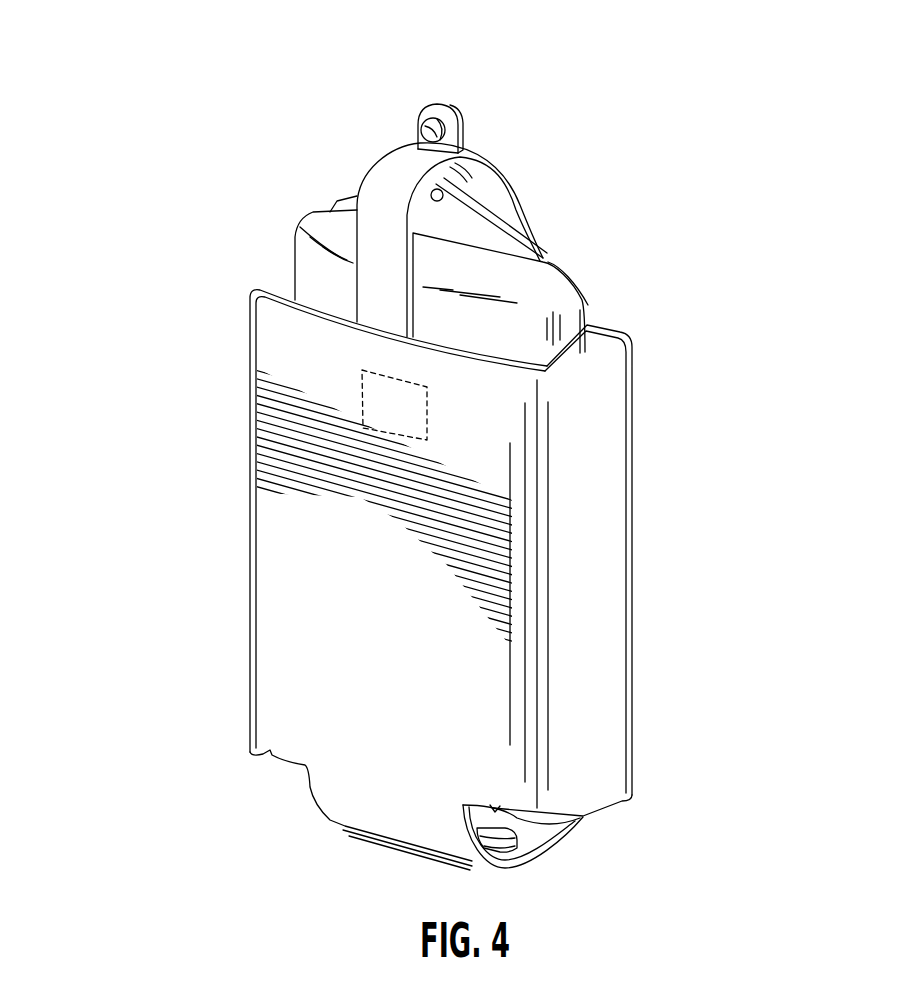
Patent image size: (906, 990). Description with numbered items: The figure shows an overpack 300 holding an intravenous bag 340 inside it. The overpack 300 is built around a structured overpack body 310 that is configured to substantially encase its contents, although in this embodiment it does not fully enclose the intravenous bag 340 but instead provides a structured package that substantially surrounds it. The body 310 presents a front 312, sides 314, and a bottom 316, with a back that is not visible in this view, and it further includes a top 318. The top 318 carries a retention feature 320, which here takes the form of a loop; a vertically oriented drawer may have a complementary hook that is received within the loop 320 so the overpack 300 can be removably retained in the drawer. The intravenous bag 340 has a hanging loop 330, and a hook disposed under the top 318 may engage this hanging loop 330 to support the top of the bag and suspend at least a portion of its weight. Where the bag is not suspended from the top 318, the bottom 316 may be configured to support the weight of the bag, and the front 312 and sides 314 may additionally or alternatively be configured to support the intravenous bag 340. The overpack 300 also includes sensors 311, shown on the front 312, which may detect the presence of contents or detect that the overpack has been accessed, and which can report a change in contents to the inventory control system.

The overpack 300 is at (178, 380).
The overpack body 310 is at (248, 583).
The sensors 311 is at (395, 410).
The front 312 is at (382, 672).
The sides 314 is at (583, 545).
The bottom 316 is at (407, 808).
The top 318 is at (386, 184).
The retention feature 320 is at (440, 113).
The hanging loop 330 is at (443, 193).
The intravenous bag 340 is at (318, 234).